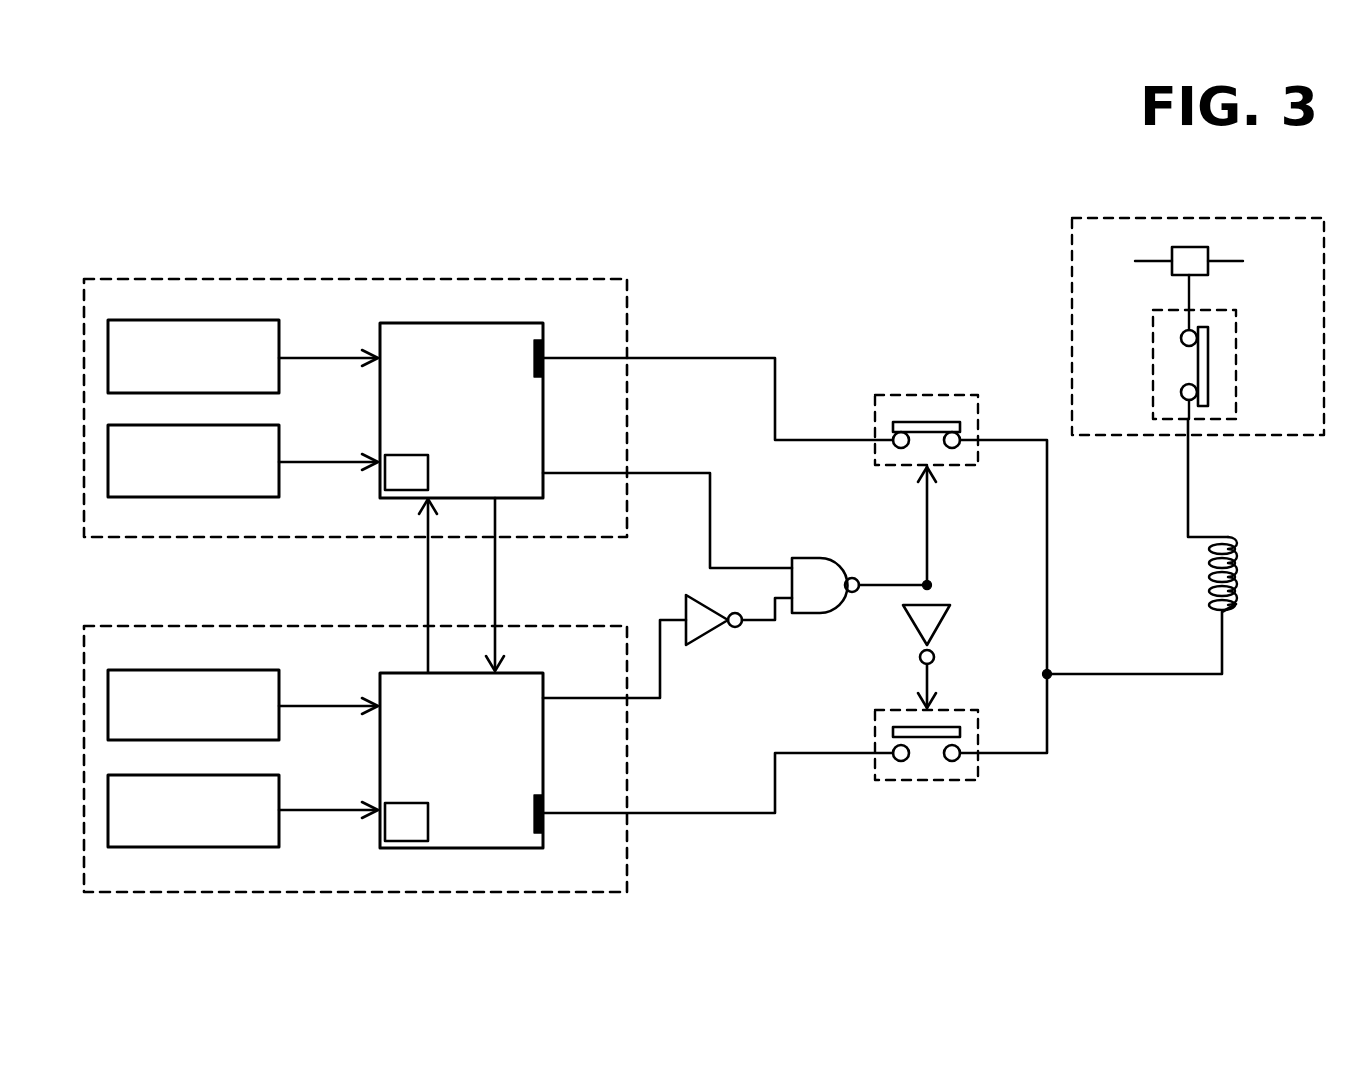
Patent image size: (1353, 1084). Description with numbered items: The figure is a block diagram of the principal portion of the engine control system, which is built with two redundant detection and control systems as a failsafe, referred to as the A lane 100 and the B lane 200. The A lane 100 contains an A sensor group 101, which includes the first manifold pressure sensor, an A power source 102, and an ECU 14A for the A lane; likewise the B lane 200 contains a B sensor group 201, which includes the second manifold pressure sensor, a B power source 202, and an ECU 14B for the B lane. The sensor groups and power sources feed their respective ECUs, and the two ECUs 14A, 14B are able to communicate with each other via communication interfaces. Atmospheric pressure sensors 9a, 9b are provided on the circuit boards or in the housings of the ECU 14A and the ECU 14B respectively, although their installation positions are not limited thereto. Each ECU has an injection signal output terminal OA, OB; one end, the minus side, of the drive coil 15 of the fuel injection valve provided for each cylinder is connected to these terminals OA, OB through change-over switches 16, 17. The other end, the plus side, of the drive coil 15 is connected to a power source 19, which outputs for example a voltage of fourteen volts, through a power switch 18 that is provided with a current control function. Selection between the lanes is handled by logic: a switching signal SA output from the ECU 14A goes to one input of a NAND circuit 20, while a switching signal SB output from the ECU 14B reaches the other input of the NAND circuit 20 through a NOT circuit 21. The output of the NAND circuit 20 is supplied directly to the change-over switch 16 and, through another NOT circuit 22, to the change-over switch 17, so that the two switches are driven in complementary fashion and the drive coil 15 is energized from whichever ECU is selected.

The A lane 100 is at (553, 280).
The B lane 200 is at (553, 893).
The A sensor group 101 is at (283, 443).
The A power source 102 is at (283, 338).
The B sensor group 201 is at (283, 793).
The B power source 202 is at (283, 688).
The ECU for the A lane 14A is at (468, 322).
The ECU for the B lane 14B is at (465, 850).
The atmospheric pressure sensor 9a is at (385, 485).
The atmospheric pressure sensor 9b is at (385, 832).
The injection signal output terminal OA is at (548, 345).
The injection signal output terminal OB is at (548, 822).
The switching signal SA is at (712, 505).
The switching signal SB is at (660, 700).
The NAND circuit 20 is at (808, 558).
The NOT circuit 21 is at (707, 635).
The NOT circuit 22 is at (937, 625).
The change-over switch 16 is at (940, 395).
The change-over switch 17 is at (935, 781).
The drive coil 15 is at (1245, 579).
The power switch 18 is at (1236, 358).
The power source 19 is at (1208, 250).